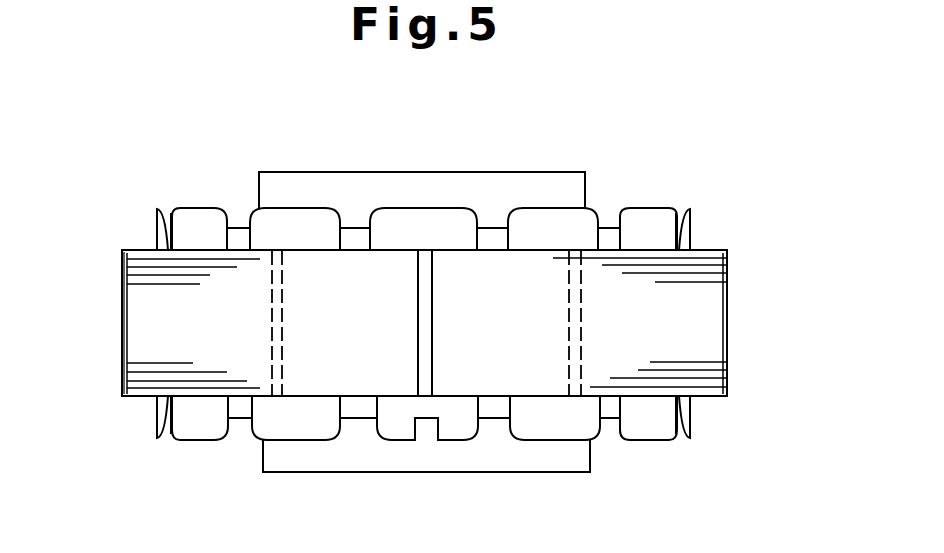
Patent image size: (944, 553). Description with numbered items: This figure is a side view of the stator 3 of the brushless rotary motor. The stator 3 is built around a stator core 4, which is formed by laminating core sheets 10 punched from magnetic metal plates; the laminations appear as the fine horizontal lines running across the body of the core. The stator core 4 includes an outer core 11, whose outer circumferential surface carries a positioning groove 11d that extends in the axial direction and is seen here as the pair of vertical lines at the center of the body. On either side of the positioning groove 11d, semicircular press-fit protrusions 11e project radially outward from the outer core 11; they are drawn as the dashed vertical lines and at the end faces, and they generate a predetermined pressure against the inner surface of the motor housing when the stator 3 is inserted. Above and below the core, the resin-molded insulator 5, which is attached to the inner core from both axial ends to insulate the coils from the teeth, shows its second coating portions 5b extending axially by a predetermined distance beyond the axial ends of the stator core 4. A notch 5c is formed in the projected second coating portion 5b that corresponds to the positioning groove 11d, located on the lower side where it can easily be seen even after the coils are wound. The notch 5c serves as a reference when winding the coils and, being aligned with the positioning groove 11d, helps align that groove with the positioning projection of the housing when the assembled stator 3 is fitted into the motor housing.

The stator 3 is at (661, 117).
The stator core 4 is at (712, 249).
The insulator 5 is at (553, 206).
The second coating portion 5b is at (197, 212).
The notch 5c is at (418, 422).
The core sheet 10 is at (124, 280).
The outer core 11 is at (712, 300).
The positioning groove 11d is at (427, 320).
The press-fit protrusion 11e is at (122, 333).